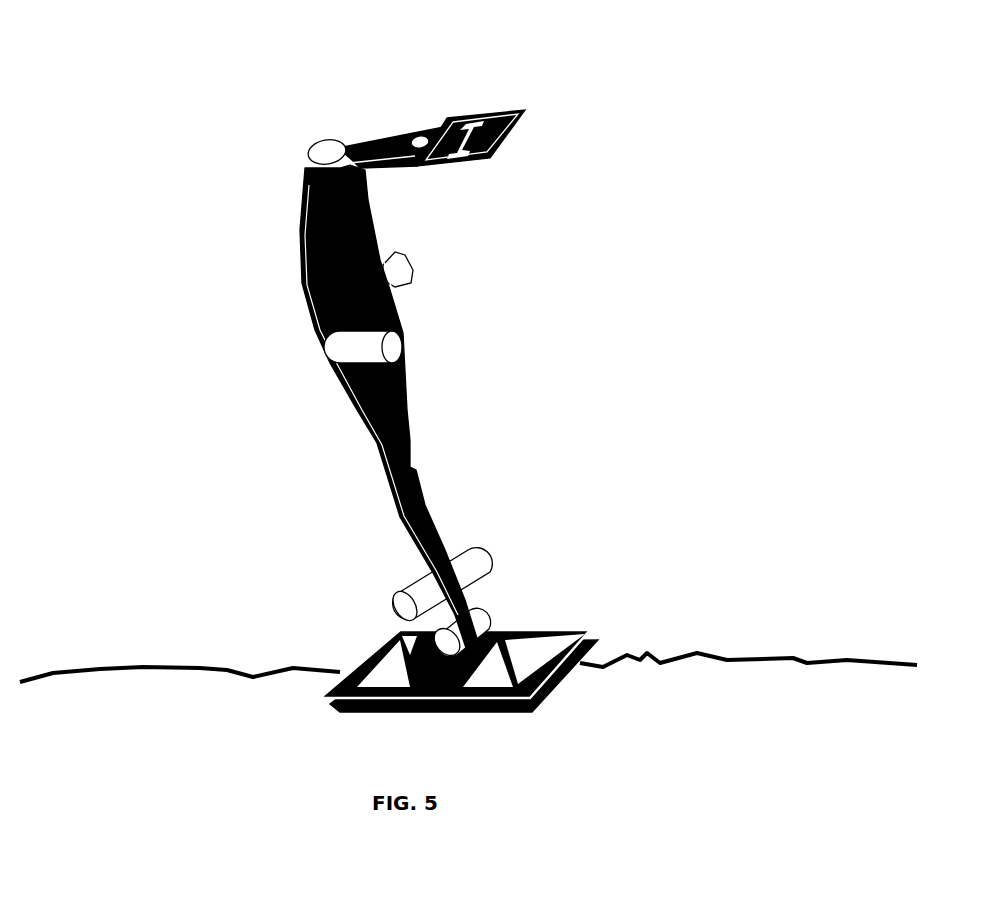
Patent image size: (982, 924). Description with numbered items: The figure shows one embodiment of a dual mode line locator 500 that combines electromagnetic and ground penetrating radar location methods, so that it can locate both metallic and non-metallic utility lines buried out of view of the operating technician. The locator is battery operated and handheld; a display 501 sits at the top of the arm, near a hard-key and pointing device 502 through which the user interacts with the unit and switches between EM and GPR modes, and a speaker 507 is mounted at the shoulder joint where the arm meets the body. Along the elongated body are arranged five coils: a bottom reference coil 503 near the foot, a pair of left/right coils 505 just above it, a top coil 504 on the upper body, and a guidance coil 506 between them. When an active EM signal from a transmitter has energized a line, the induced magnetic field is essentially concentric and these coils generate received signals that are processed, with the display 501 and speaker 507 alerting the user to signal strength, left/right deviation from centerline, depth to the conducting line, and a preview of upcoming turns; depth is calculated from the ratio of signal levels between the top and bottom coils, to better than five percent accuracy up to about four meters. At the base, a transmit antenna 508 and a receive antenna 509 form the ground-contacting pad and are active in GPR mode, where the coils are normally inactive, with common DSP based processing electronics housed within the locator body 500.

The line locator 500 is at (273, 250).
The display 501 is at (478, 118).
The hard-key and pointing device 502 is at (415, 128).
The bottom reference coil 503 is at (490, 618).
The top coil 504 is at (420, 248).
The left/right coils 505 is at (488, 548).
The guidance coil 506 is at (412, 348).
The speaker 507 is at (318, 136).
The transmit antenna 508 is at (378, 708).
The receive antenna 509 is at (490, 708).